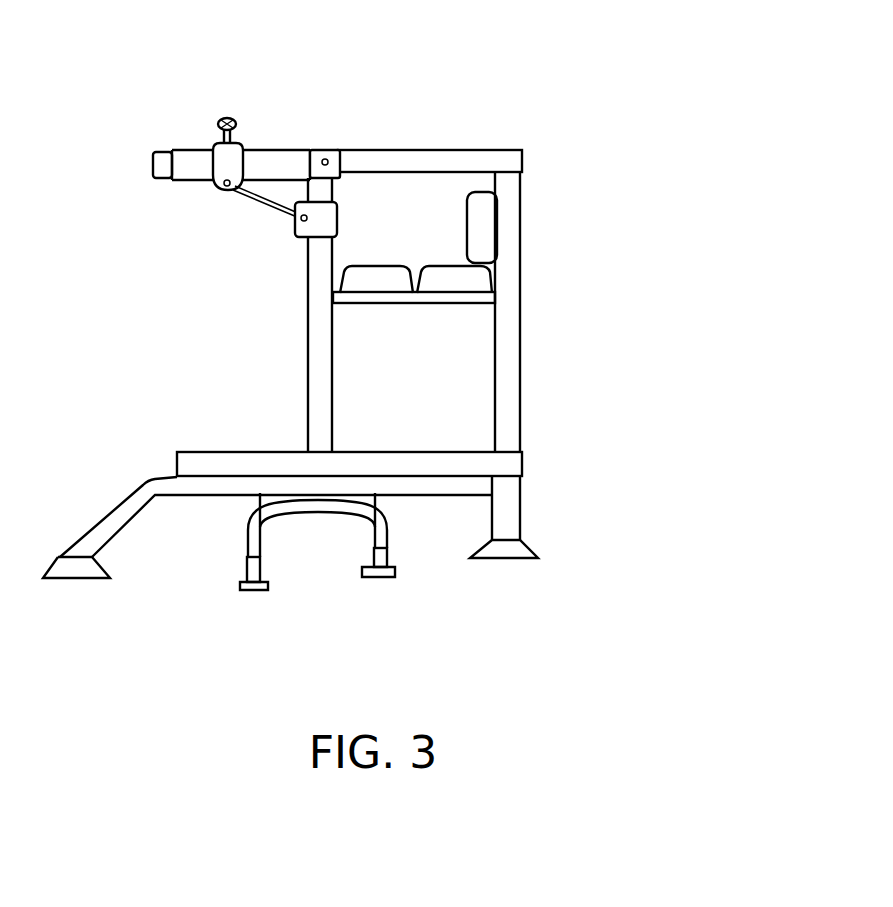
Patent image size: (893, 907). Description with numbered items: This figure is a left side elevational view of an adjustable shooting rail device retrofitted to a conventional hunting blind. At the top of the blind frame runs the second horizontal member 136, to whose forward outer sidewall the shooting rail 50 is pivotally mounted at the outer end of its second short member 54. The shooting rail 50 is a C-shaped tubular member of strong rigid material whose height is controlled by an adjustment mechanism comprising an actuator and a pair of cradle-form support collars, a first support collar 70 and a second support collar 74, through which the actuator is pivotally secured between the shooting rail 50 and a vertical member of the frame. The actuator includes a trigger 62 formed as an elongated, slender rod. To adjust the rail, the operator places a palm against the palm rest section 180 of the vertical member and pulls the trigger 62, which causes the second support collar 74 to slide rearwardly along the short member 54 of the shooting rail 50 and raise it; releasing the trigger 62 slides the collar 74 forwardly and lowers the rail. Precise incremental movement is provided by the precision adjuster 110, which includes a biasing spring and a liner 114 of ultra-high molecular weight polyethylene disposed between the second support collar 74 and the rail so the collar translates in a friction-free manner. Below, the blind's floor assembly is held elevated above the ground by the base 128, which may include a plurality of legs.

The shooting rail 50 is at (154, 148).
The precision adjuster 110 is at (257, 148).
The liner 114 is at (288, 160).
The second short member 54 is at (326, 150).
The palm rest section 180 is at (330, 200).
The second horizontal member 136 is at (470, 148).
The second support collar 74 is at (213, 170).
The trigger 62 is at (268, 207).
The first support collar 70 is at (338, 208).
The base 128 is at (248, 540).